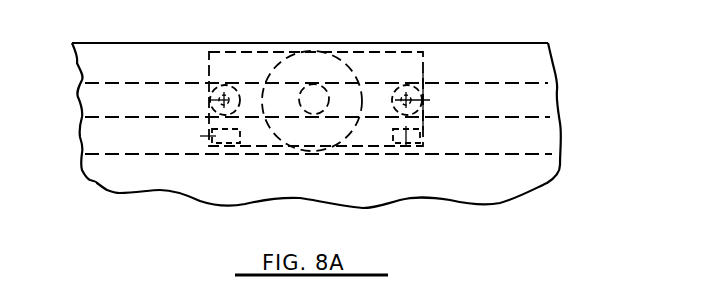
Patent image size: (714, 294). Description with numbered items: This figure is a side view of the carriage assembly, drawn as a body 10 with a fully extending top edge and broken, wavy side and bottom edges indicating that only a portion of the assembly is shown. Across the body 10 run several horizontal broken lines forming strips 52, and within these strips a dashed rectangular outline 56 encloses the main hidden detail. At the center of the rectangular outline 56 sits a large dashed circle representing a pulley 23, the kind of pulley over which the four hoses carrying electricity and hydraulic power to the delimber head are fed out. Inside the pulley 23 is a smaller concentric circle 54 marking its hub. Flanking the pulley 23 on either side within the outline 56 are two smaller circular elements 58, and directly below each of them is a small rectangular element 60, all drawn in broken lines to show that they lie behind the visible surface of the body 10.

The body / substrate 10 is at (514, 58).
The strips 52 is at (175, 58).
The rectangular region 56 is at (400, 63).
The pulley 23 is at (331, 67).
The inner circle 54 is at (306, 81).
The small circular openings 58 is at (224, 100).
The small rectangular openings 60 is at (200, 136).